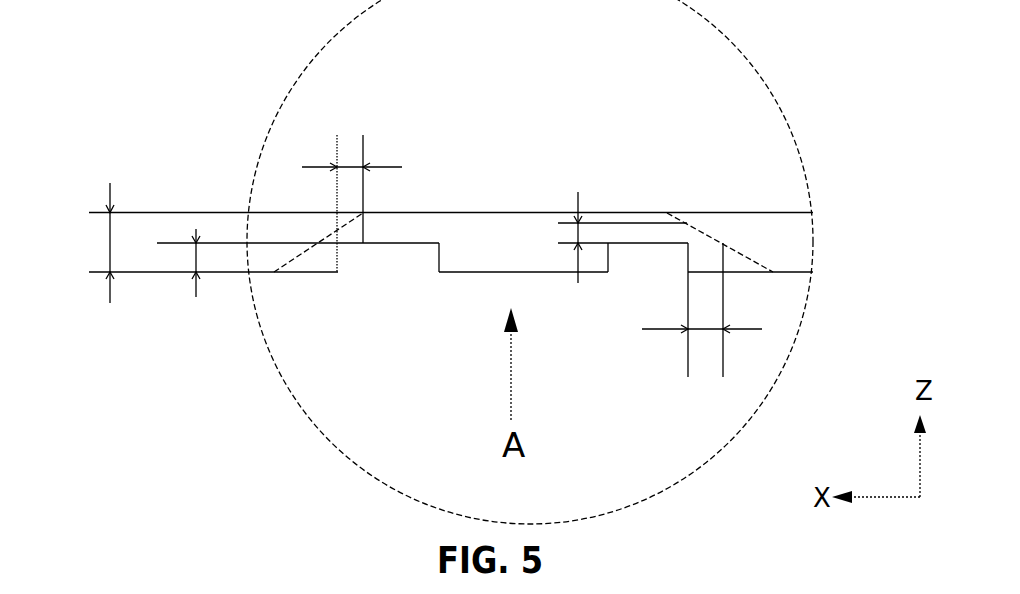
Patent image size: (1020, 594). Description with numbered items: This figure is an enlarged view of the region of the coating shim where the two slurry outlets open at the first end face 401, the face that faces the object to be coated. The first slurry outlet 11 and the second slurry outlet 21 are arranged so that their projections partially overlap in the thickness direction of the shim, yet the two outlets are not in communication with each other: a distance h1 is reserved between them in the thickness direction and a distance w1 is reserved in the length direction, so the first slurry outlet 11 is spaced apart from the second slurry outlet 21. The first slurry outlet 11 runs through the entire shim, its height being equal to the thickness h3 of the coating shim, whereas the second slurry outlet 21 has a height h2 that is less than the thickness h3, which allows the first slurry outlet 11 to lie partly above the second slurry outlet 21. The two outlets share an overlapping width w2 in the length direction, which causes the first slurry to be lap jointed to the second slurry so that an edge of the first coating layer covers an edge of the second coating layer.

The first slurry outlet 11 is at (268, 233).
The second slurry outlet 21 is at (378, 260).
The first end face 401 is at (527, 232).
The distance h1 is at (580, 227).
The height h2 is at (193, 260).
The thickness h3 is at (108, 247).
The distance w1 is at (705, 335).
The overlapping width w2 is at (347, 167).